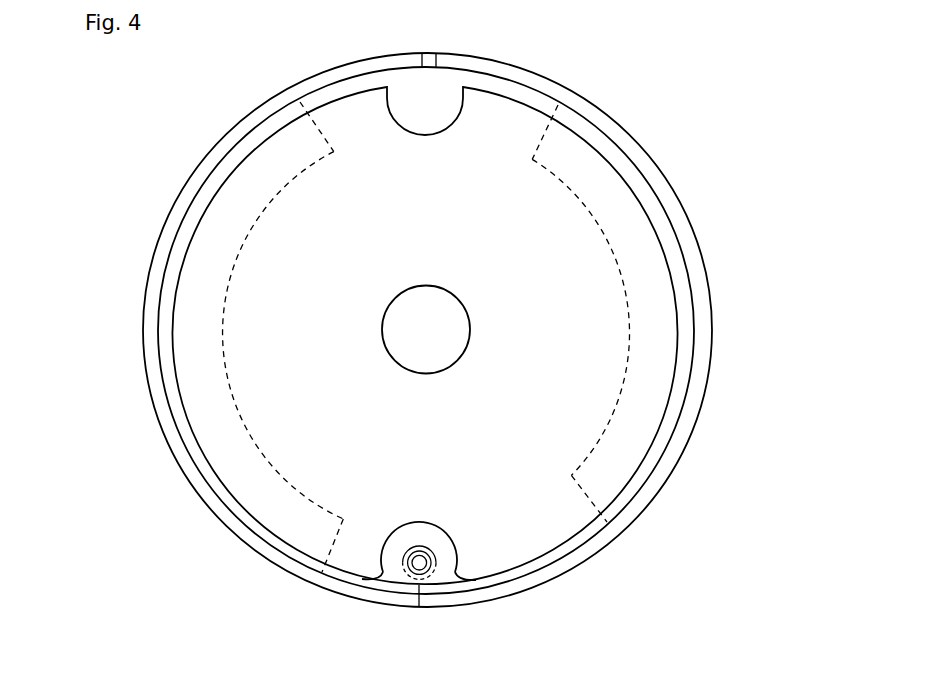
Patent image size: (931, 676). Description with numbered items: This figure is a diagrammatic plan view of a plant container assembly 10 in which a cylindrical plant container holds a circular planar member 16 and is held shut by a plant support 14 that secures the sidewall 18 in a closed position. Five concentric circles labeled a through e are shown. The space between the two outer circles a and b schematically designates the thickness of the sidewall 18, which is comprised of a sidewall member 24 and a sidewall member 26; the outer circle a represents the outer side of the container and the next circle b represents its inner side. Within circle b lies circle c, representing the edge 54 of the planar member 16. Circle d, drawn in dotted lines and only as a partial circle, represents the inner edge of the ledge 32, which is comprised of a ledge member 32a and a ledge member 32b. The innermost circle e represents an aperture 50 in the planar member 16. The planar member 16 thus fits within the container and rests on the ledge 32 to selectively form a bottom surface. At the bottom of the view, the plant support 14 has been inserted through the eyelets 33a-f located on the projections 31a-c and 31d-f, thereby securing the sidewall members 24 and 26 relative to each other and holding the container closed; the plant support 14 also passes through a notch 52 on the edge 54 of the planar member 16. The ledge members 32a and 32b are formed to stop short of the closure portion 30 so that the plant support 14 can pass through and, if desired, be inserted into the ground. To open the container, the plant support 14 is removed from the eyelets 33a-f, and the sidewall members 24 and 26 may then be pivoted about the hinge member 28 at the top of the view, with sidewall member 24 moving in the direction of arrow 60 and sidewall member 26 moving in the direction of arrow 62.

The plant container assembly 10 is at (812, 277).
The plant support 14 is at (420, 563).
The planar member 16 is at (307, 306).
The sidewall 18 is at (237, 133).
The sidewall member 24 is at (332, 78).
The sidewall member 26 is at (523, 69).
The hinge member 28 is at (425, 56).
The closure portion 30 is at (422, 614).
The ledge 32 is at (545, 158).
The ledge member 32a is at (222, 386).
The ledge member 32b is at (631, 356).
The aperture 50 is at (437, 350).
The notch 52 is at (422, 523).
The edge 54 is at (663, 420).
The arrow 60 is at (130, 222).
The arrow 62 is at (735, 380).
The projections 31a-c is at (380, 576).
The projections 31d-f is at (450, 578).
The eyelets 33a-f is at (403, 553).
The outer circle a is at (665, 180).
The circle b is at (673, 220).
The circle c is at (667, 257).
The circle d is at (628, 297).
The innermost circle e is at (457, 295).